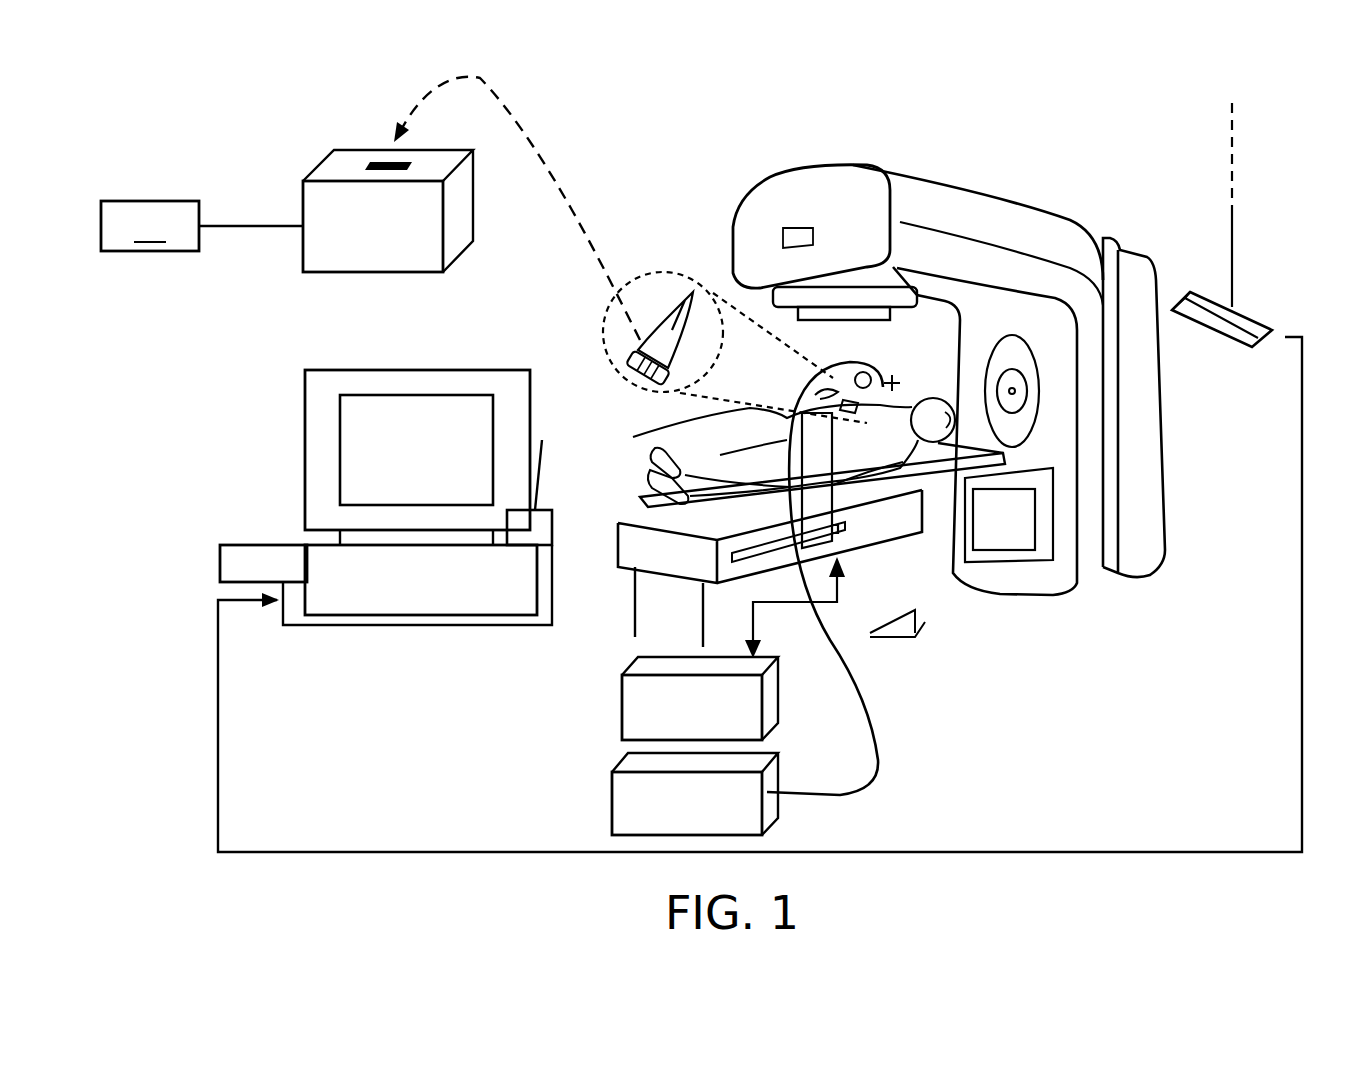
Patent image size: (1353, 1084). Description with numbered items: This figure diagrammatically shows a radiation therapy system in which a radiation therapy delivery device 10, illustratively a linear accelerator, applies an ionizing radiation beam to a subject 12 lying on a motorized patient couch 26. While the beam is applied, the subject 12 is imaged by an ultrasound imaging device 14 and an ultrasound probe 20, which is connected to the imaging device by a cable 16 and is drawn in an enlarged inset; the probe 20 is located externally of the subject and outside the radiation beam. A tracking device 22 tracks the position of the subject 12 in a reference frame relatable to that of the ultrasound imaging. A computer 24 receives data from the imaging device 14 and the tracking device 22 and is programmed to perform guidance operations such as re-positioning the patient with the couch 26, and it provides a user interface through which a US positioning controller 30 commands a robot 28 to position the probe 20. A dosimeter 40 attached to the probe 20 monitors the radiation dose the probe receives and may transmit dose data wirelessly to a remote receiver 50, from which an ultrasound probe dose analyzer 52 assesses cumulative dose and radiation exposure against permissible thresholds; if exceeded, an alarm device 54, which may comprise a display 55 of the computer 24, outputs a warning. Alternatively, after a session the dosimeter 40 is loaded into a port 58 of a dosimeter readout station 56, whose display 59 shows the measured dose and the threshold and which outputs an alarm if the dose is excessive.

The radiation therapy delivery device 10 is at (977, 207).
The subject 12 is at (888, 461).
The ultrasound imaging device 14 is at (612, 805).
The cable 16 is at (875, 737).
The ultrasound probe 20 is at (667, 271).
The tracking device 22 is at (1247, 323).
The computer 24 is at (305, 485).
The motorized patient couch 26 is at (887, 527).
The robot 28 is at (660, 426).
The US positioning controller 30 is at (622, 710).
The dosimeter 40 is at (627, 353).
The remote receiver 50 is at (552, 515).
The ultrasound probe dose analyzer 52 is at (348, 603).
The alarm device 54 is at (220, 562).
The display 55 is at (429, 466).
The dosimeter readout station 56 is at (325, 175).
The port 58 is at (383, 157).
The display 59 is at (202, 226).